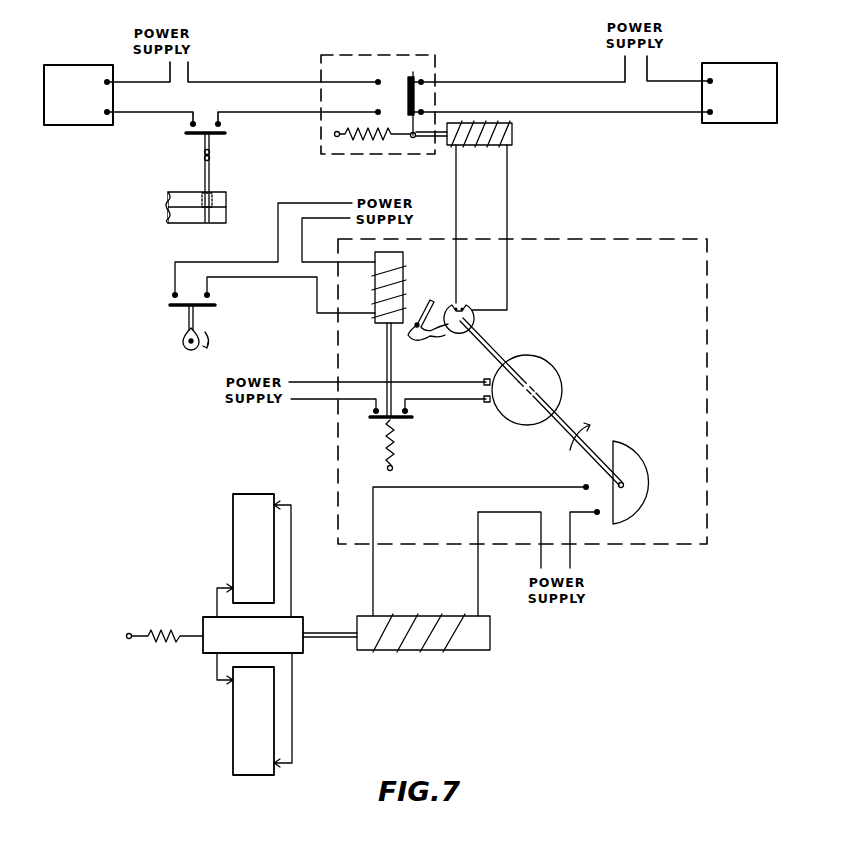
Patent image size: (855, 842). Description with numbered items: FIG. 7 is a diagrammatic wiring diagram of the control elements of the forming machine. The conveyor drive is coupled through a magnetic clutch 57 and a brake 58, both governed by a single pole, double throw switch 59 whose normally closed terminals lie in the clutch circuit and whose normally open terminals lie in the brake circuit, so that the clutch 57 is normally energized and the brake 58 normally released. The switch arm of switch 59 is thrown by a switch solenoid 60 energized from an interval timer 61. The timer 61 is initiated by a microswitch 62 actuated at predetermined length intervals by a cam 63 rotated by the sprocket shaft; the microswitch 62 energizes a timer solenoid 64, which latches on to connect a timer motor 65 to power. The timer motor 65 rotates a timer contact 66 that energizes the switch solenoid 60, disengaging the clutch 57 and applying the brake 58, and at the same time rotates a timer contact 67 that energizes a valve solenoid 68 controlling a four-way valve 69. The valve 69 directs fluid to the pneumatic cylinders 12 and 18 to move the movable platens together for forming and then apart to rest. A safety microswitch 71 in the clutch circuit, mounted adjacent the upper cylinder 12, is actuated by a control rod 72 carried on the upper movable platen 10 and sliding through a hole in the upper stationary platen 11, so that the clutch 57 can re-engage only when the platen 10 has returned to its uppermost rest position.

The upper movable platen 10 is at (168, 212).
The upper stationary platen 11 is at (170, 198).
The upper pneumatic cylinder 12 is at (243, 543).
The lower pneumatic cylinder 18 is at (243, 725).
The magnetic clutch 57 is at (78, 95).
The brake 58 is at (739, 93).
The single pole, double throw switch 59 is at (378, 65).
The switch solenoid 60 is at (512, 133).
The interval timer 61 is at (550, 253).
The microswitch 62 is at (170, 306).
The cam 63 is at (182, 342).
The timer solenoid 64 is at (385, 315).
The timer motor 65 is at (552, 377).
The timer contact 66 is at (476, 325).
The timer contact 67 is at (648, 468).
The valve solenoid 68 is at (490, 633).
The four-way valve 69 is at (253, 634).
The safety microswitch 71 is at (186, 137).
The control rod 72 is at (210, 180).